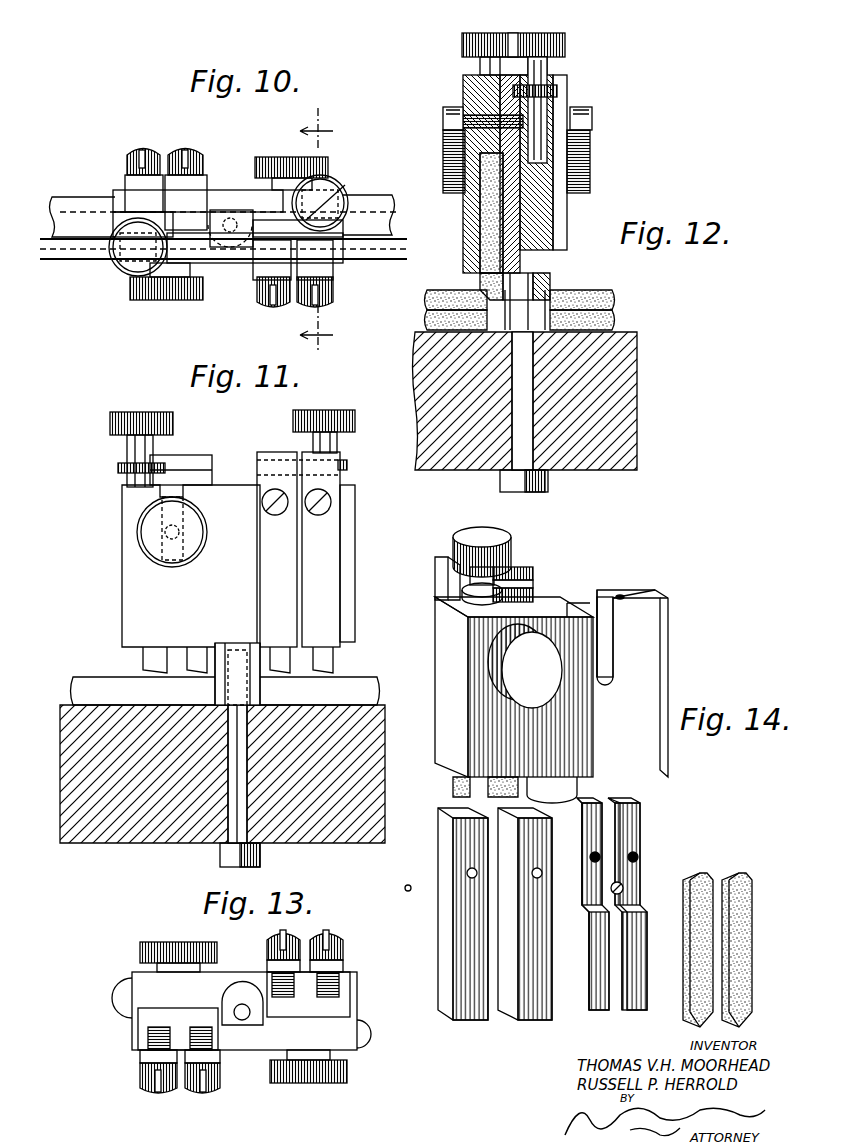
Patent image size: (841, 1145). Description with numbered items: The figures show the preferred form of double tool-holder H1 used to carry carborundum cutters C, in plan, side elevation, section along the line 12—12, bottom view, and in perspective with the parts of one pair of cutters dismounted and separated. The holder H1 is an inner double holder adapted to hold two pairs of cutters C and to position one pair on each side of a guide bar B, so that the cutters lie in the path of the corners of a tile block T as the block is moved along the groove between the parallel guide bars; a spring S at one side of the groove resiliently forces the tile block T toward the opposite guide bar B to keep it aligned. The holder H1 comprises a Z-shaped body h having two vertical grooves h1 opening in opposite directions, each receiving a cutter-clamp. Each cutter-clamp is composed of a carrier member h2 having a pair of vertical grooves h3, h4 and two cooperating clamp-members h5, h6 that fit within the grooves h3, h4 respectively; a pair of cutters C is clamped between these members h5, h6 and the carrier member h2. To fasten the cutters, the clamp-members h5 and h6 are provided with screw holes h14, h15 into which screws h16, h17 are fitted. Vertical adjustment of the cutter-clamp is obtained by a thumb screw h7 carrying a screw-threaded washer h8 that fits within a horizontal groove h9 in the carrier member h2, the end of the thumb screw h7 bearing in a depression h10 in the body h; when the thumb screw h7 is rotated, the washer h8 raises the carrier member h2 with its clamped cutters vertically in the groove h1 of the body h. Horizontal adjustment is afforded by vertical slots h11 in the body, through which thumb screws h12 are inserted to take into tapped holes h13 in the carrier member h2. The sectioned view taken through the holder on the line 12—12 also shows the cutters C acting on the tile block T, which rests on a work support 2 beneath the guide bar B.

In FIG. 10, the body h is at (238, 224).
In FIG. 12, the body h is at (548, 237).
In FIG. 11, the body h is at (180, 586).
In FIG. 13, the body h is at (242, 1014).
In FIG. 14, the body h is at (560, 600).
In FIG. 14, the vertical groove h1 is at (625, 622).
In FIG. 10, the carrier member h2 is at (150, 213).
In FIG. 11, the carrier member h2 is at (202, 456).
In FIG. 13, the carrier member h2 is at (152, 1018).
In FIG. 14, the carrier member h2 is at (648, 822).
In FIG. 14, the vertical groove h3 is at (595, 805).
In FIG. 14, the vertical groove h4 is at (633, 805).
In FIG. 10, the clamp-member h5 is at (135, 185).
In FIG. 12, the clamp-member h5 is at (472, 212).
In FIG. 11, the clamp-member h5 is at (322, 590).
In FIG. 13, the clamp-member h5 is at (142, 1058).
In FIG. 14, the clamp-member h5 is at (463, 914).
In FIG. 10, the clamp-member h6 is at (196, 186).
In FIG. 12, the clamp-member h6 is at (560, 208).
In FIG. 11, the clamp-member h6 is at (272, 591).
In FIG. 13, the clamp-member h6 is at (213, 1058).
In FIG. 14, the clamp-member h6 is at (505, 850).
In FIG. 10, the thumb screw h7 is at (128, 262).
In FIG. 12, the thumb screw h7 is at (530, 33).
In FIG. 11, the thumb screw h7 is at (132, 412).
In FIG. 13, the thumb screw h7 is at (128, 983).
In FIG. 14, the thumb screw h7 is at (495, 540).
In FIG. 12, the screw-threaded washer h8 is at (560, 90).
In FIG. 11, the screw-threaded washer h8 is at (120, 468).
In FIG. 14, the screw-threaded washer h8 is at (470, 595).
In FIG. 12, the horizontal groove h9 is at (548, 68).
In FIG. 11, the horizontal groove h9 is at (274, 454).
In FIG. 14, the horizontal groove h9 is at (535, 580).
In FIG. 12, the depression h10 is at (575, 165).
In FIG. 14, the depression h10 is at (621, 595).
In FIG. 11, the vertical slot h11 is at (150, 497).
In FIG. 14, the vertical slot h11 is at (605, 650).
In FIG. 10, the thumb screw h12 is at (272, 128).
In FIG. 12, the thumb screw h12 is at (445, 152).
In FIG. 11, the thumb screw h12 is at (192, 548).
In FIG. 13, the thumb screw h12 is at (163, 942).
In FIG. 14, the thumb screw h12 is at (540, 685).
In FIG. 14, the tapped hole h13 is at (622, 885).
In FIG. 14, the screw hole h14 is at (470, 872).
In FIG. 14, the screw hole h15 is at (535, 880).
In FIG. 10, the screw h16 is at (134, 150).
In FIG. 11, the screw h16 is at (278, 515).
In FIG. 13, the screw h16 is at (158, 1085).
In FIG. 10, the screw h17 is at (183, 150).
In FIG. 12, the screw h17 is at (452, 107).
In FIG. 11, the screw h17 is at (318, 515).
In FIG. 13, the screw h17 is at (208, 1085).
In FIG. 10, the double holder H1 is at (200, 290).
In FIG. 11, the double holder H1 is at (137, 596).
In FIG. 13, the double holder H1 is at (124, 1038).
In FIG. 14, the double holder H1 is at (648, 680).
In FIG. 12, the cutter C is at (490, 240).
In FIG. 11, the cutter C is at (158, 650).
In FIG. 13, the cutter C is at (200, 1025).
In FIG. 14, the cutter C is at (455, 785).
In FIG. 10, the guide bar B is at (380, 218).
In FIG. 12, the guide bar B is at (570, 310).
In FIG. 12, the tile block T is at (435, 297).
In FIG. 10, the spring S is at (80, 247).
In FIG. 12, the work block 2 is at (425, 346).
In FIG. 11, the work block 2 is at (72, 720).
In FIG. 10, the section line 12 is at (322, 225).